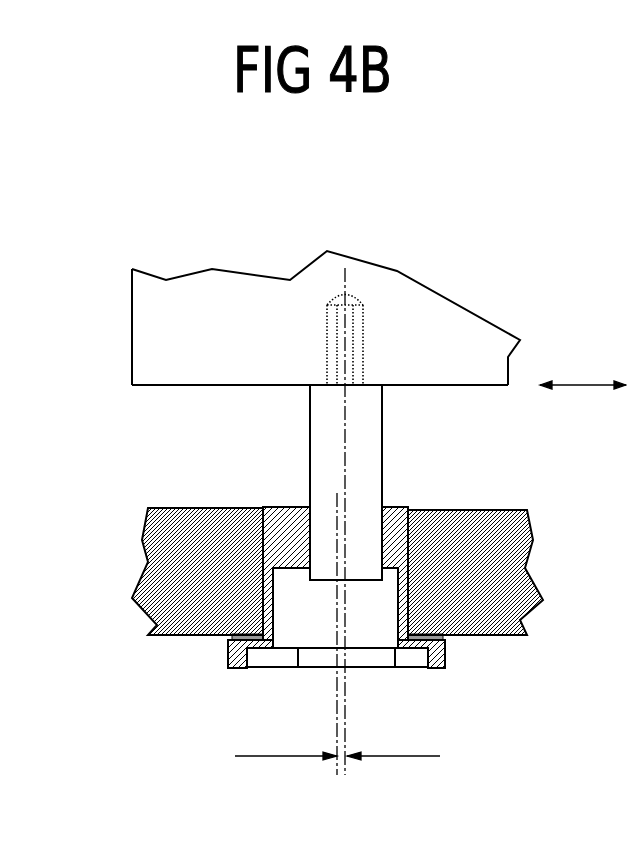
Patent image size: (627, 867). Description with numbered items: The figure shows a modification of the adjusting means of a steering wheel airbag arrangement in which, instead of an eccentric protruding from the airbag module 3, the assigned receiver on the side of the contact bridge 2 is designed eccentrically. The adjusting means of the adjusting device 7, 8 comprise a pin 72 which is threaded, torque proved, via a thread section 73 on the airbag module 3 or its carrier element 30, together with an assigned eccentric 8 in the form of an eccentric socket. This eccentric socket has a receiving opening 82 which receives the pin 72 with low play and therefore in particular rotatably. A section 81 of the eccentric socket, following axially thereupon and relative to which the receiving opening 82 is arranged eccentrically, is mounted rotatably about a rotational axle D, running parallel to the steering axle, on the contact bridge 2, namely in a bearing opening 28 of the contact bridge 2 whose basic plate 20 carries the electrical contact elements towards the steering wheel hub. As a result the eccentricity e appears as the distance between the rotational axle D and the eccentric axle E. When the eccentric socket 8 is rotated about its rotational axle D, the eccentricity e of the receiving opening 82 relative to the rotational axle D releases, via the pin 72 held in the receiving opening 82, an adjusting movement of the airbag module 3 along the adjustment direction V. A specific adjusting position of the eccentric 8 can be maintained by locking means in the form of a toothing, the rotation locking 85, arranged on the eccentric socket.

The airbag module 3 is at (492, 318).
The carrier element 30 is at (412, 383).
The thread section 73 is at (345, 317).
The adjusting device 7 is at (383, 420).
The pin 72 is at (320, 530).
The contact bridge 2 is at (147, 522).
The basic plate 20 is at (160, 577).
The eccentric 8 is at (413, 518).
The receiving opening 82 is at (368, 538).
The section of the eccentric socket 81 is at (275, 628).
The rotation locking 85 is at (384, 616).
The bearing opening 28 is at (445, 662).
The eccentric axle E is at (347, 462).
The rotational axle D is at (337, 705).
The adjustment direction V is at (583, 372).
The eccentricity e is at (337, 742).